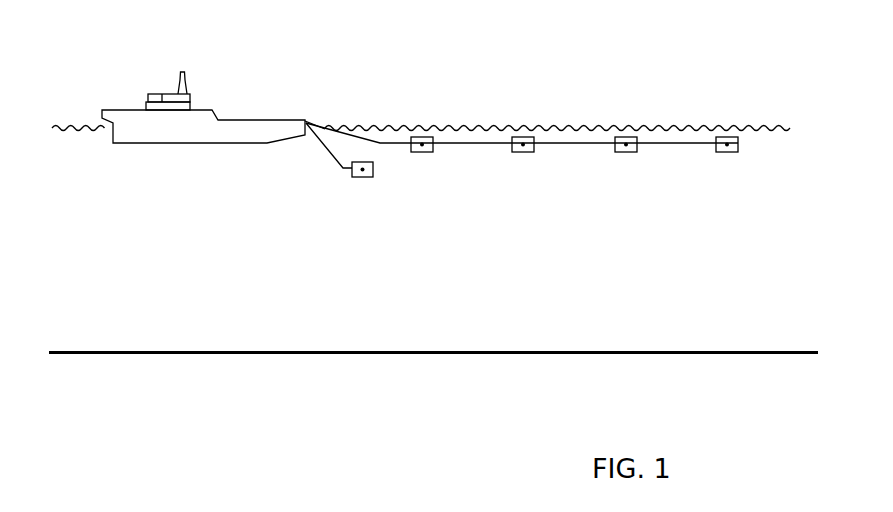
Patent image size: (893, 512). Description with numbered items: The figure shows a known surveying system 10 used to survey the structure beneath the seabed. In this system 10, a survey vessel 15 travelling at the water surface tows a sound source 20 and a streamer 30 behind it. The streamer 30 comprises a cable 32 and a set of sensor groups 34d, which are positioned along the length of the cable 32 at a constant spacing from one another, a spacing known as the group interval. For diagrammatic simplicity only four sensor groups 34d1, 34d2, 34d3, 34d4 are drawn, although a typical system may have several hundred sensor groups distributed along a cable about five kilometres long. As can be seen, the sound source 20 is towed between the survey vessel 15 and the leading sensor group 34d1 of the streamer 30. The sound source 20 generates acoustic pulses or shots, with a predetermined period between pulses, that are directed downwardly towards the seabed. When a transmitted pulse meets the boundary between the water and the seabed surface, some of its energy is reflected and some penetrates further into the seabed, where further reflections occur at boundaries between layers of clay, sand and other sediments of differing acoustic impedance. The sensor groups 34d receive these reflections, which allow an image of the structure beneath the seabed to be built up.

The surveying system 10 is at (352, 82).
The survey vessel 15 is at (129, 108).
The sound source 20 is at (362, 178).
The streamer 30 is at (743, 233).
The cable 32 is at (400, 141).
The sensor groups 34d is at (576, 104).
The first sensor group 34d1 is at (438, 164).
The second sensor group 34d2 is at (539, 164).
The third sensor group 34d3 is at (641, 165).
The fourth sensor group 34d4 is at (743, 165).